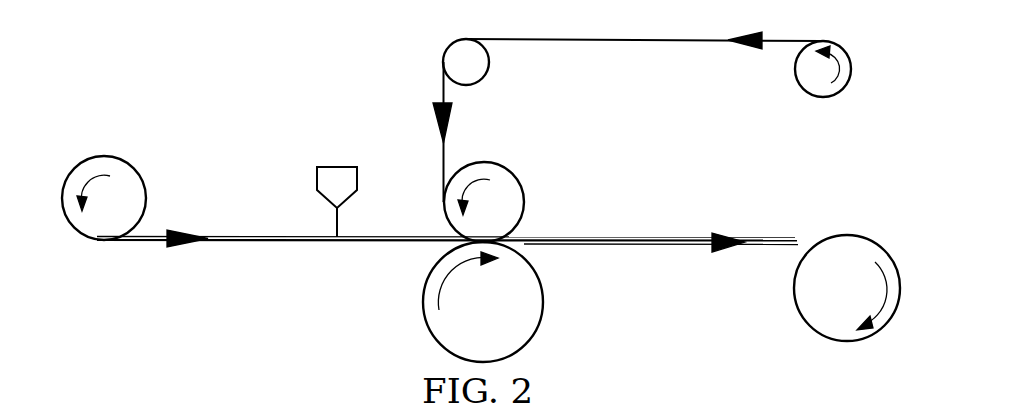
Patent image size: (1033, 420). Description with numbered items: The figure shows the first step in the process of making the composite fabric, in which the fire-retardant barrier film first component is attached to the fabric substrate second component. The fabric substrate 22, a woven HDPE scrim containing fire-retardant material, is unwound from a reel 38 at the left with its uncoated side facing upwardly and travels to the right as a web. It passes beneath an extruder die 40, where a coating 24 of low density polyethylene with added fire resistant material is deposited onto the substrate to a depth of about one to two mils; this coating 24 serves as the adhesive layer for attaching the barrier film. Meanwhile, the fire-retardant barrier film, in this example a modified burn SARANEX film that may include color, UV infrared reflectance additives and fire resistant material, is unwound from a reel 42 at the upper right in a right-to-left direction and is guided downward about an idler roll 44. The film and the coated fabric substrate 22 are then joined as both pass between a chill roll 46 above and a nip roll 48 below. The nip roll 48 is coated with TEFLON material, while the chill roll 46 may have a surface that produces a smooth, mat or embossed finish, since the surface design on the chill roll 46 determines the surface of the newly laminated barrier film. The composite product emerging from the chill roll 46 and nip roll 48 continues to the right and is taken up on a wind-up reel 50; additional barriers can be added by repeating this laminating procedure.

The fabric substrate 22 is at (240, 236).
The coating layer 24 is at (277, 244).
The reel 38 is at (118, 177).
The extruder die 40 is at (317, 180).
The reel 42 is at (805, 72).
The idler roll 44 is at (472, 68).
The chill roll 46 is at (511, 180).
The nip roll 48 is at (531, 292).
The wind-up reel 50 is at (803, 289).